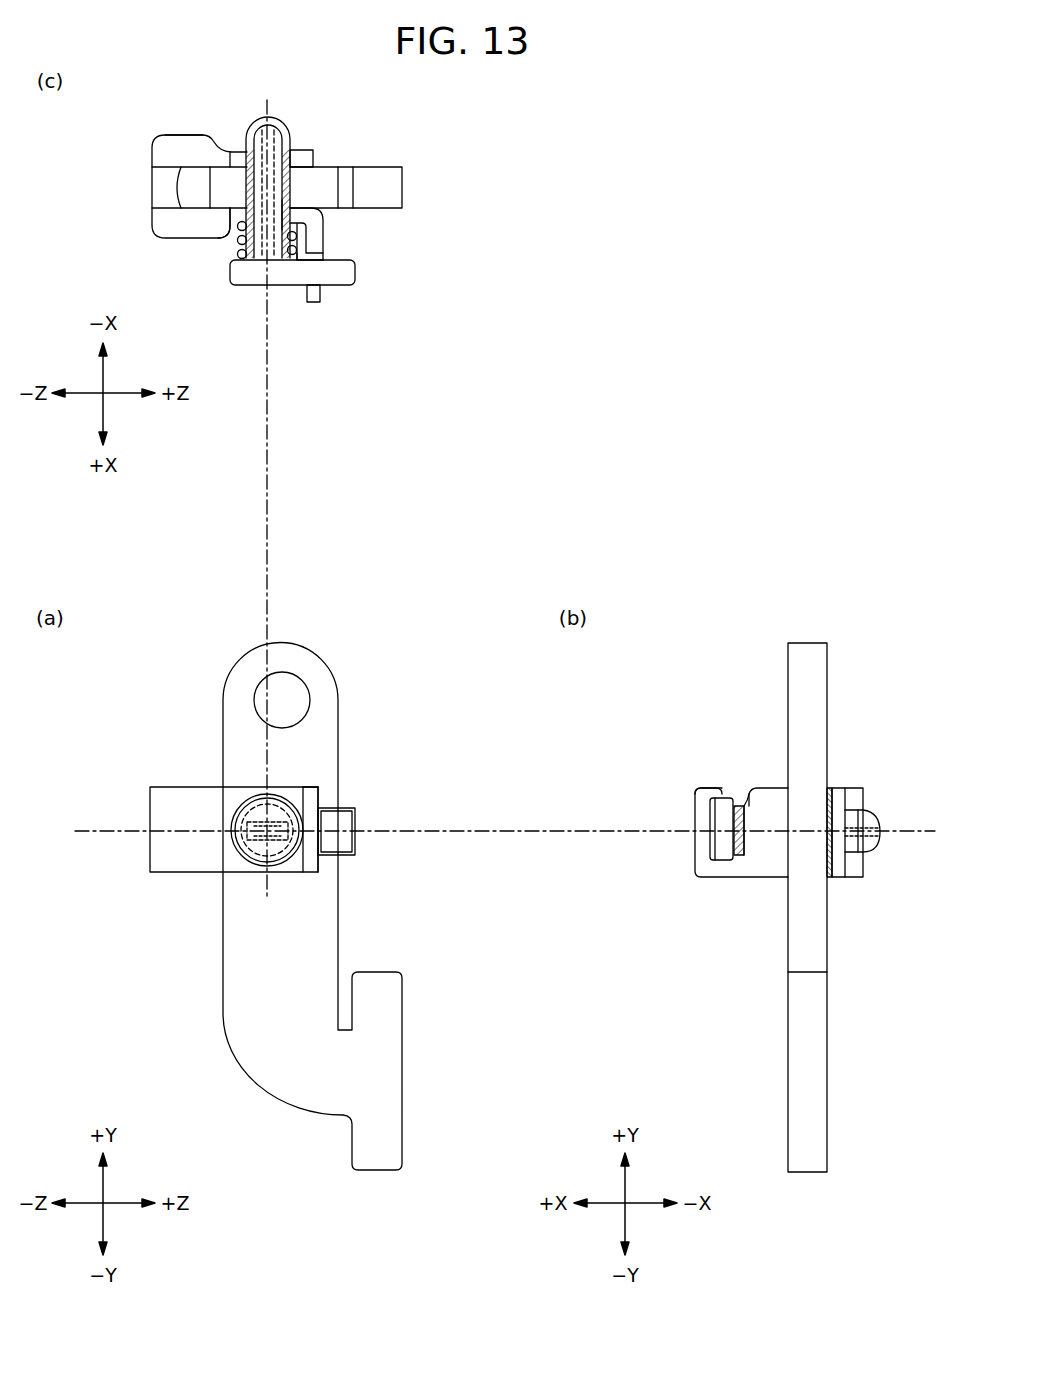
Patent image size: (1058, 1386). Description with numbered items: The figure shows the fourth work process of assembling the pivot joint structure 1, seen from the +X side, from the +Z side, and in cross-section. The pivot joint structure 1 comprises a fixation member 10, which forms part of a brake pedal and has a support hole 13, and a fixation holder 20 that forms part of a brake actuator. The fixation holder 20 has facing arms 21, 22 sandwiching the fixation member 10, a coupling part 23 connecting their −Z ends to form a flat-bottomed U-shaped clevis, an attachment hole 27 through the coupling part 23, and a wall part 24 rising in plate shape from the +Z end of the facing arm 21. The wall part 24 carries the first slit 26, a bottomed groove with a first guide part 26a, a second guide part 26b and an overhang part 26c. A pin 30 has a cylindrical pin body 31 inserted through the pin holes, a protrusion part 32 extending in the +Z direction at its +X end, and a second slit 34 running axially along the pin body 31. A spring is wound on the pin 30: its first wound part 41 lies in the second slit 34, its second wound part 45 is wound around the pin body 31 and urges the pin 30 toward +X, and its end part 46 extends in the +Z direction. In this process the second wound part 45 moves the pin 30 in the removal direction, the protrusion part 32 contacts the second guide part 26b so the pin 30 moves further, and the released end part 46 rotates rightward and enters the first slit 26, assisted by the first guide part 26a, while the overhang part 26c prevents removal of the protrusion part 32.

The pivot joint structure 1 is at (400, 615).
The fixation member 10 is at (335, 733).
The support hole 13 is at (258, 693).
The fixation holder 20 is at (163, 228).
The facing arm 21 is at (228, 220).
The facing arm 22 is at (203, 138).
The coupling part 23 is at (152, 168).
The wall part 24 is at (320, 297).
The first slit 26 is at (338, 252).
The first guide part 26a is at (745, 800).
The second guide part 26b is at (745, 862).
The overhang part 26c is at (710, 796).
The attachment hole 27 is at (152, 195).
The pin 30 is at (258, 287).
The pin body 31 is at (277, 145).
The protrusion part 32 is at (353, 273).
The second slit 34 is at (245, 126).
The first wound part 41 is at (292, 127).
The second wound part 45 is at (238, 228).
The end part 46 is at (300, 263).